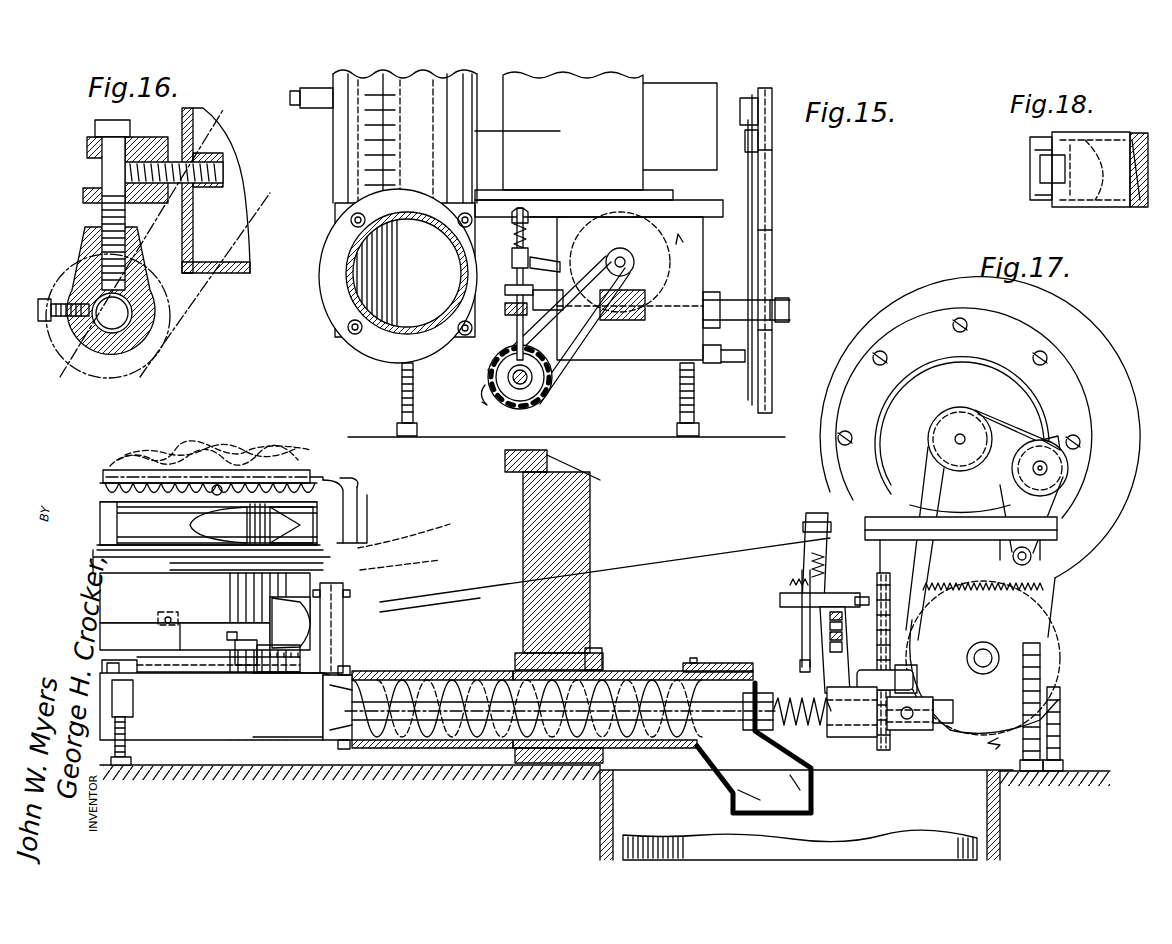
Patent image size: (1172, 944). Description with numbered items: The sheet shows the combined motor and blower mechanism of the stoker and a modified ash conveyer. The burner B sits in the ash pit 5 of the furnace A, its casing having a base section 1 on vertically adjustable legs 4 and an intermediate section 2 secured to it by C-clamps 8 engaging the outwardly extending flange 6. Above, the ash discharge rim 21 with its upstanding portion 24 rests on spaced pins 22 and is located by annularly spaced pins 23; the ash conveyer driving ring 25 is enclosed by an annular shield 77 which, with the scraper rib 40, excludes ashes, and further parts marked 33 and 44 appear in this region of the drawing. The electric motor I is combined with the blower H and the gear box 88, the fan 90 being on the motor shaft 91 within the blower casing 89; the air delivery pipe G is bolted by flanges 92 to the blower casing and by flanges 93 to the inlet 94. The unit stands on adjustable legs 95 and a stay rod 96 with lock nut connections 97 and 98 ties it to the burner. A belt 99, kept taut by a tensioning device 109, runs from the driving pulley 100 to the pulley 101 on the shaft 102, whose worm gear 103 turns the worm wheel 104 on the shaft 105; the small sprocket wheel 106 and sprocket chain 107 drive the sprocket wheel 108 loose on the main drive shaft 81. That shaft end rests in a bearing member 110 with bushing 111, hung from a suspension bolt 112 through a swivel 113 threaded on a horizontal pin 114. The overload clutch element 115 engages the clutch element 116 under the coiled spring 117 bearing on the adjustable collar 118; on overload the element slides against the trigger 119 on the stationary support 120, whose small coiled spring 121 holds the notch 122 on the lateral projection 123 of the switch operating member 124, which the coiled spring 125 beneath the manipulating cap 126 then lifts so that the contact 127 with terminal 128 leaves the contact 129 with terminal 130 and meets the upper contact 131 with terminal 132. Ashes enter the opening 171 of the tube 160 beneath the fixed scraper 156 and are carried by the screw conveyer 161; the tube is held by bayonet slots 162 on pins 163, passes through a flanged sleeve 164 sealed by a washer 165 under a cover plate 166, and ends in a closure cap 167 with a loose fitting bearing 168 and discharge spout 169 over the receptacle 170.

In FIG. 18, the base section 1 is at (1035, 137).
In FIG. 17, the base section 1 is at (185, 745).
In FIG. 17, the intermediate section 2 is at (205, 624).
In FIG. 17, the vertically adjustable legs 4 is at (125, 766).
In FIG. 17, the ash pit 5 is at (447, 521).
In FIG. 17, the outwardly extending flange 6 is at (265, 668).
In FIG. 17, the C-clamps 8 is at (235, 660).
In FIG. 17, the ash discharge rim 21 is at (106, 476).
In FIG. 17, the spaced pins 22 is at (208, 478).
In FIG. 17, the annularly spaced pins 23 is at (232, 478).
In FIG. 17, the upstanding portion 24 is at (130, 465).
In FIG. 17, the ash conveyer driving ring 25 is at (312, 480).
In FIG. 17, the material line 33 is at (378, 546).
In FIG. 17, the scraper rib 40 is at (420, 570).
In FIG. 17, the feeder cylinder 44 is at (165, 565).
In FIG. 17, the annular shield 77 is at (268, 582).
In FIG. 16, the main drive shaft 81 is at (114, 323).
In FIG. 15, the main drive shaft 81 is at (503, 380).
In FIG. 18, the main drive shaft 81 is at (1138, 208).
In FIG. 17, the main drive shaft 81 is at (470, 722).
In FIG. 16, the gear box 88 is at (233, 273).
In FIG. 15, the gear box 88 is at (657, 358).
In FIG. 17, the gear box 88 is at (961, 547).
In FIG. 15, the blower casing 89 is at (470, 185).
In FIG. 17, the blower casing 89 is at (1092, 552).
In FIG. 15, the fan 90 is at (415, 215).
In FIG. 15, the motor shaft 91 is at (480, 131).
In FIG. 17, the motor shaft 91 is at (963, 437).
In FIG. 15, the co-operating flanges 92 is at (322, 276).
In FIG. 17, the co-operating flanges 92 is at (814, 515).
In FIG. 17, the cooperating flanges 93 is at (345, 600).
In FIG. 17, the inlet 94 is at (318, 643).
In FIG. 15, the adjustable legs 95 is at (402, 398).
In FIG. 17, the adjustable legs 95 is at (1052, 727).
In FIG. 15, the stay rod 96 is at (714, 363).
In FIG. 17, the stay rod 96 is at (878, 680).
In FIG. 17, the adjustable lock nut connection 97 is at (125, 676).
In FIG. 15, the adjustable lock nut connection 98 is at (737, 364).
In FIG. 17, the adjustable lock nut connection 98 is at (906, 678).
In FIG. 15, the belt 99 is at (773, 200).
In FIG. 17, the belt 99 is at (928, 468).
In FIG. 15, the driving pulley 100 is at (740, 103).
In FIG. 17, the driving pulley 100 is at (946, 427).
In FIG. 15, the pulley 101 is at (784, 272).
In FIG. 17, the pulley 101 is at (1060, 622).
In FIG. 15, the shaft 102 is at (788, 312).
In FIG. 17, the shaft 102 is at (985, 675).
In FIG. 15, the worm gear 103 is at (622, 322).
In FIG. 15, the worm wheel 104 is at (652, 298).
In FIG. 15, the shaft 105 is at (636, 264).
In FIG. 15, the small sprocket wheel 106 is at (630, 240).
In FIG. 16, the sprocket chain 107 is at (180, 332).
In FIG. 15, the sprocket chain 107 is at (562, 366).
In FIG. 17, the sprocket chain 107 is at (883, 737).
In FIG. 16, the sprocket wheel 108 is at (190, 308).
In FIG. 15, the sprocket wheel 108 is at (536, 404).
In FIG. 17, the sprocket wheel 108 is at (890, 740).
In FIG. 15, the tensioning device 109 is at (779, 165).
In FIG. 17, the tensioning device 109 is at (1015, 470).
In FIG. 16, the bearing member 110 is at (140, 338).
In FIG. 15, the bearing member 110 is at (506, 408).
In FIG. 17, the bearing member 110 is at (920, 728).
In FIG. 16, the bushing 111 is at (90, 345).
In FIG. 17, the bushing 111 is at (914, 735).
In FIG. 16, the suspension bolt 112 is at (102, 218).
In FIG. 15, the suspension bolt 112 is at (508, 308).
In FIG. 16, the swivel 113 is at (95, 190).
In FIG. 15, the swivel 113 is at (510, 288).
In FIG. 16, the horizontal pin 114 is at (140, 148).
In FIG. 15, the horizontal pin 114 is at (568, 300).
In FIG. 17, the overload clutch element 115 is at (873, 730).
In FIG. 15, the clutch element 116 is at (488, 393).
In FIG. 17, the clutch element 116 is at (853, 720).
In FIG. 15, the coiled spring 117 is at (536, 383).
In FIG. 17, the coiled spring 117 is at (842, 735).
In FIG. 17, the adjustable collar 118 is at (760, 668).
In FIG. 15, the trigger 119 is at (517, 329).
In FIG. 17, the trigger 119 is at (820, 645).
In FIG. 15, the stationary support 120 is at (514, 250).
In FIG. 17, the stationary support 120 is at (780, 598).
In FIG. 17, the small coiled spring 121 is at (790, 588).
In FIG. 17, the notch 122 is at (805, 655).
In FIG. 17, the lateral projection 123 is at (800, 666).
In FIG. 15, the switch operating member 124 is at (562, 216).
In FIG. 17, the switch operating member 124 is at (795, 606).
In FIG. 15, the coiled spring 125 is at (540, 215).
In FIG. 17, the coiled spring 125 is at (812, 560).
In FIG. 15, the manipulating cap 126 is at (528, 210).
In FIG. 17, the manipulating cap 126 is at (810, 535).
In FIG. 17, the contact 127 is at (845, 628).
In FIG. 17, the terminal 128 is at (790, 620).
In FIG. 17, the contact 129 is at (845, 638).
In FIG. 17, the terminal 130 is at (845, 650).
In FIG. 17, the upper contact 131 is at (845, 615).
In FIG. 17, the terminal 132 is at (855, 595).
In FIG. 17, the fixed scraper 156 is at (397, 517).
In FIG. 18, the tube 160 is at (1110, 207).
In FIG. 17, the tube 160 is at (650, 670).
In FIG. 18, the screw conveyer 161 is at (1075, 207).
In FIG. 17, the screw conveyer 161 is at (450, 740).
In FIG. 18, the bayonet slots 162 is at (1035, 150).
In FIG. 17, the bayonet slots 162 is at (345, 672).
In FIG. 18, the pins 163 is at (1045, 170).
In FIG. 17, the pins 163 is at (342, 663).
In FIG. 17, the flanged sleeve 164 is at (514, 658).
In FIG. 17, the washer 165 is at (590, 650).
In FIG. 17, the cover plate 166 is at (603, 658).
In FIG. 17, the closure cap 167 is at (745, 725).
In FIG. 17, the loose fitting bearing 168 is at (766, 700).
In FIG. 17, the discharge spout 169 is at (772, 803).
In FIG. 17, the receptacle 170 is at (690, 836).
In FIG. 18, the opening 171 is at (1140, 132).
In FIG. 17, the opening 171 is at (425, 675).
In FIG. 17, the furnace A is at (505, 462).
In FIG. 17, the burner B is at (210, 444).
In FIG. 15, the air delivery pipe G is at (352, 312).
In FIG. 17, the air delivery pipe G is at (500, 594).
In FIG. 15, the blower H is at (345, 147).
In FIG. 17, the blower H is at (913, 285).
In FIG. 15, the motor I is at (599, 144).
In FIG. 17, the motor I is at (962, 435).